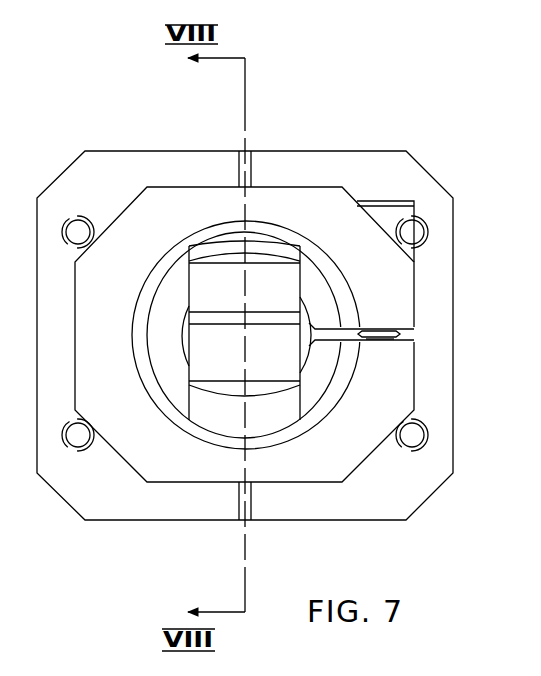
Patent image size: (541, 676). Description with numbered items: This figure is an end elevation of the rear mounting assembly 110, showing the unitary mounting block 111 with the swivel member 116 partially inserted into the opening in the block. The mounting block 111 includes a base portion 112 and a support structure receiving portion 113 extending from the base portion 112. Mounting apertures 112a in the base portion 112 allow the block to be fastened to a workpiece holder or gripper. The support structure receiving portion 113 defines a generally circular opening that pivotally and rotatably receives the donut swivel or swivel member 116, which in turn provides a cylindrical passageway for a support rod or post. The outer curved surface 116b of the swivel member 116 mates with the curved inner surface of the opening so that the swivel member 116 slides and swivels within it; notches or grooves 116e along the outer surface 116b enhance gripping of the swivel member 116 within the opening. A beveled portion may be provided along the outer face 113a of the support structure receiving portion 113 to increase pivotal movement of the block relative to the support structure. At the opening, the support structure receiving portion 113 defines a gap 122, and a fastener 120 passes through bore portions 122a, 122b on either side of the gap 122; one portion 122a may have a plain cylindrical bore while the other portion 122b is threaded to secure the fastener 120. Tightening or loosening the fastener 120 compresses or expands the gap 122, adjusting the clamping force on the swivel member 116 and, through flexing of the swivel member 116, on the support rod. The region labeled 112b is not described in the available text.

The rear mounting assembly 110 is at (444, 156).
The mounting block 111 is at (168, 133).
The base portion 112 is at (305, 163).
The mounting apertures 112a is at (78, 225).
The housing bearing surface 112b is at (181, 338).
The support structure receiving portion 113 is at (356, 463).
The outer face 113a is at (272, 200).
The swivel member 116 is at (211, 414).
The outer curved surface 116b is at (270, 387).
The notches 116e is at (278, 387).
The fastener 120 is at (404, 210).
The gap 122 is at (407, 334).
The bore portion 122a is at (403, 300).
The threaded bore portion 122b is at (407, 367).